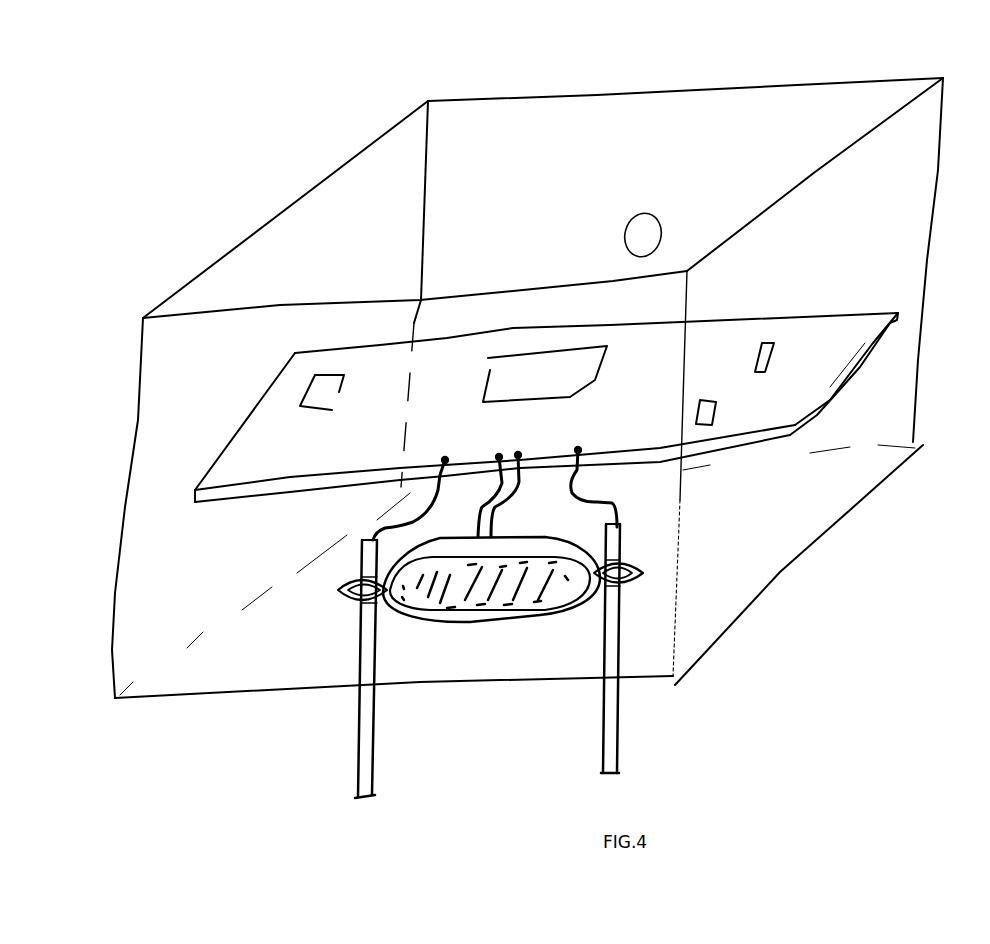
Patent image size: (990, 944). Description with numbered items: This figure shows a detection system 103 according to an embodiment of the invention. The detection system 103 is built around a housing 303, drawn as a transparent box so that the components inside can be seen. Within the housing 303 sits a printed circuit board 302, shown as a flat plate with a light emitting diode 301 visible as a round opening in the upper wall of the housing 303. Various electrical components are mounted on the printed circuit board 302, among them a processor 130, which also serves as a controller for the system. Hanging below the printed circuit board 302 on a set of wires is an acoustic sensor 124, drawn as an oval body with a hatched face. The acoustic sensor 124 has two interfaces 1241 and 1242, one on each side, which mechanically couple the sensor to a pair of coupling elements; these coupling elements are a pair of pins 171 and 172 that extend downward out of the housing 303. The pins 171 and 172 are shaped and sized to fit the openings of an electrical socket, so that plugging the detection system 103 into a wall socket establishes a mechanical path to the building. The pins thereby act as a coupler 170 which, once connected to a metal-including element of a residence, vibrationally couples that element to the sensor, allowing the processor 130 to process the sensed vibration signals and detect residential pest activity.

The housing 303 is at (428, 98).
The light emitting diode 301 is at (678, 211).
The printed circuit board 302 is at (860, 386).
The processor 130 is at (562, 378).
The acoustic sensor 124 is at (538, 622).
The interface 1241 is at (650, 552).
The interface 1242 is at (336, 587).
The coupler 170 is at (328, 710).
The pin 171 is at (630, 737).
The pin 172 is at (387, 797).
The detection system 103 is at (195, 836).